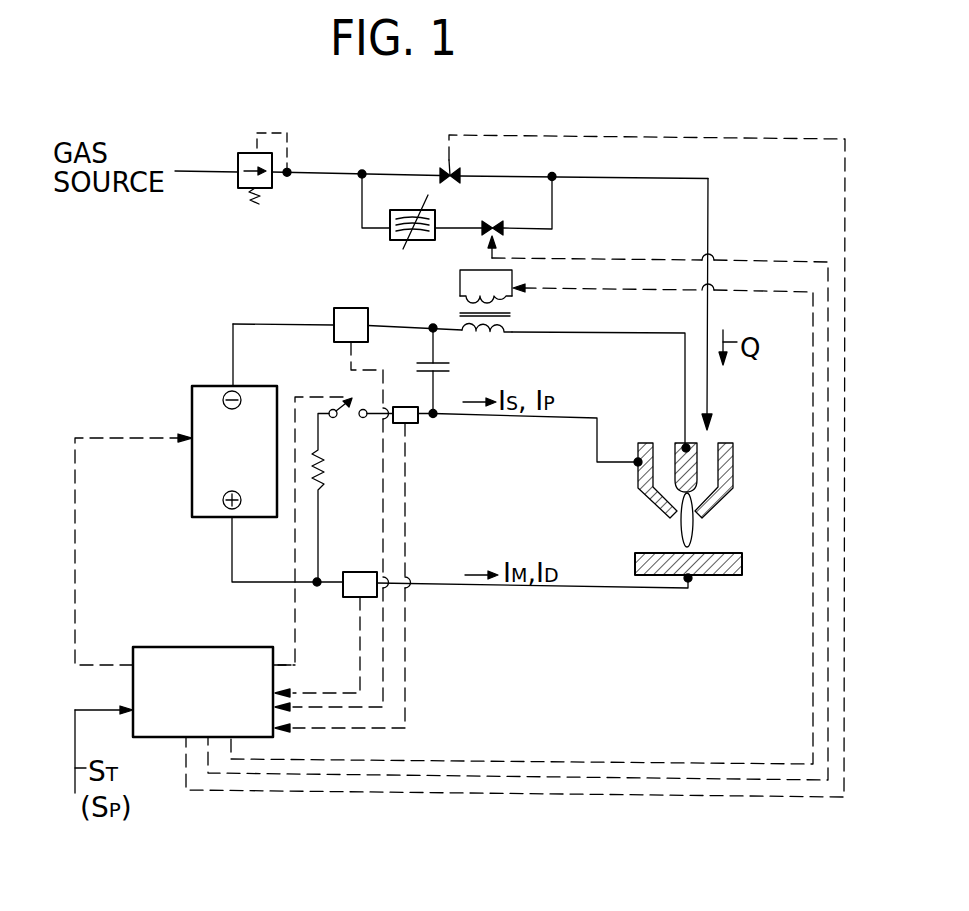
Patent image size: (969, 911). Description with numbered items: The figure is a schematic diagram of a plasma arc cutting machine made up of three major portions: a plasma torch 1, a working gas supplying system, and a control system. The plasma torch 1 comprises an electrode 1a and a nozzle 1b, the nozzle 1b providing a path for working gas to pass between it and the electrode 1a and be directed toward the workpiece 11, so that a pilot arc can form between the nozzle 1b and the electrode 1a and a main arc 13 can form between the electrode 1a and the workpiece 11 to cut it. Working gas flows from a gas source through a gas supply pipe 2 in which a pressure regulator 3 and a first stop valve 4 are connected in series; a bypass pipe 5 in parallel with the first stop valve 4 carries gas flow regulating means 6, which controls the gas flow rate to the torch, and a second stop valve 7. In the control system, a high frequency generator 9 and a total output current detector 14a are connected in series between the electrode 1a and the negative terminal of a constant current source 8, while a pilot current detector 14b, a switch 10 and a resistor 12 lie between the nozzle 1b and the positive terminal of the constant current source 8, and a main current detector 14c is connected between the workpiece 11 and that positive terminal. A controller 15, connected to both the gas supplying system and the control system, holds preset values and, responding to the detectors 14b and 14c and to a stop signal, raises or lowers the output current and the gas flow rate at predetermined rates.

The plasma torch 1 is at (708, 463).
The electrode 1a is at (700, 458).
The nozzle 1b is at (723, 509).
The gas supply pipe 2 is at (385, 172).
The pressure regulator 3 is at (237, 158).
The first stop valve 4 is at (446, 167).
The bypass pipe 5 is at (362, 212).
The gas flow regulating means 6 is at (403, 246).
The second stop valve 7 is at (504, 224).
The constant current source 8 is at (190, 410).
The high frequency generator 9 is at (460, 290).
The switch 10 is at (345, 395).
The workpiece 11 is at (728, 577).
The resistor 12 is at (323, 468).
The main arc 13 is at (681, 530).
The total output current detector 14a is at (334, 309).
The pilot current detector 14b is at (420, 423).
The main current detector 14c is at (352, 598).
The controller 15 is at (210, 647).